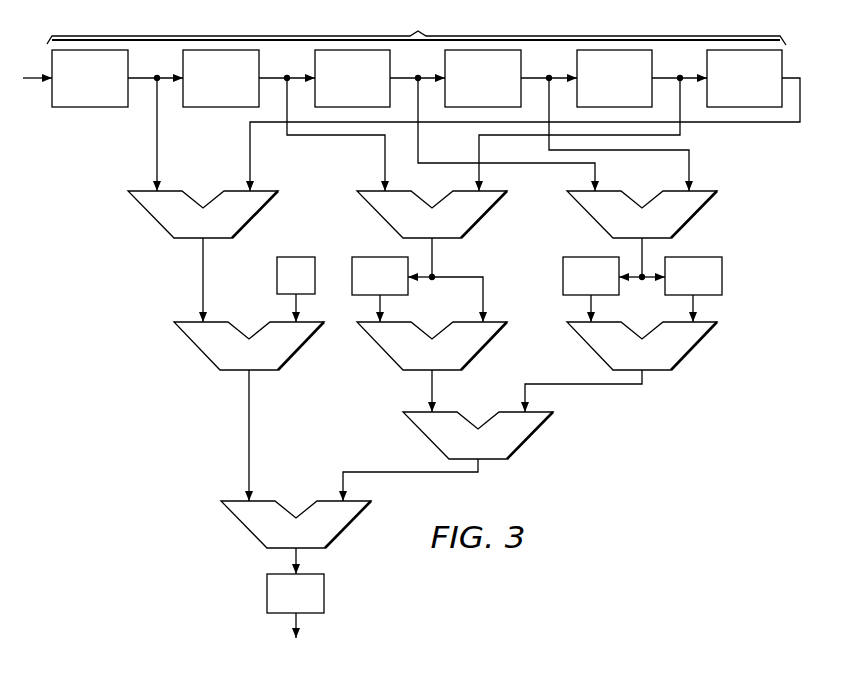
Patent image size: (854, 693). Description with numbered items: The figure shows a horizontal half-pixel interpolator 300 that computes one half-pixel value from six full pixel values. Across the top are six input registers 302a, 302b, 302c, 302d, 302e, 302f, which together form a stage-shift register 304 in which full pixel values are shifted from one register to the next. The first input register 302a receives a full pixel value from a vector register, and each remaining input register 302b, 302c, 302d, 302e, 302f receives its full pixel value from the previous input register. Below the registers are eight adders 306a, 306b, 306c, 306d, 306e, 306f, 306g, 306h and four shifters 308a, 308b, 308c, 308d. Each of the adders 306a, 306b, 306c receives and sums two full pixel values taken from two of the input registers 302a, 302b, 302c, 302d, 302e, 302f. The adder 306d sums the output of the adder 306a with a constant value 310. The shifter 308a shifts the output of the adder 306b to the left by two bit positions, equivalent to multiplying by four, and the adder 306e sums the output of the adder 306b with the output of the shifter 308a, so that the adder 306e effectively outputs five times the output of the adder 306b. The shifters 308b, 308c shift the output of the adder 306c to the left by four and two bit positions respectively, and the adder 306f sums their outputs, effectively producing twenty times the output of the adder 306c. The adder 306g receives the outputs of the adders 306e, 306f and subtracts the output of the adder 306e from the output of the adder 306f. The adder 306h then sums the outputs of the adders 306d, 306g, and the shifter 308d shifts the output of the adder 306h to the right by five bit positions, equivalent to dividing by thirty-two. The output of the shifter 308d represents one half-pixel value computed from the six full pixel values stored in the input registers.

The horizontal half-pixel interpolator 300 is at (624, 491).
The first input register 302a is at (67, 90).
The input register 302b is at (198, 90).
The input register 302c is at (329, 90).
The input register 302d is at (460, 90).
The input register 302e is at (591, 90).
The input register 302f is at (766, 90).
The stage-shift register 304 is at (416, 58).
The adder 306a is at (150, 214).
The adder 306b is at (487, 215).
The adder 306c is at (703, 215).
The adder 306d is at (197, 346).
The adder 306e is at (378, 346).
The adder 306f is at (697, 347).
The adder 306g is at (530, 432).
The adder 306h is at (243, 521).
The shifter 308a is at (363, 257).
The shifter 308b is at (563, 280).
The shifter 308c is at (722, 280).
The shifter 308d is at (267, 596).
The constant value 310 is at (277, 272).